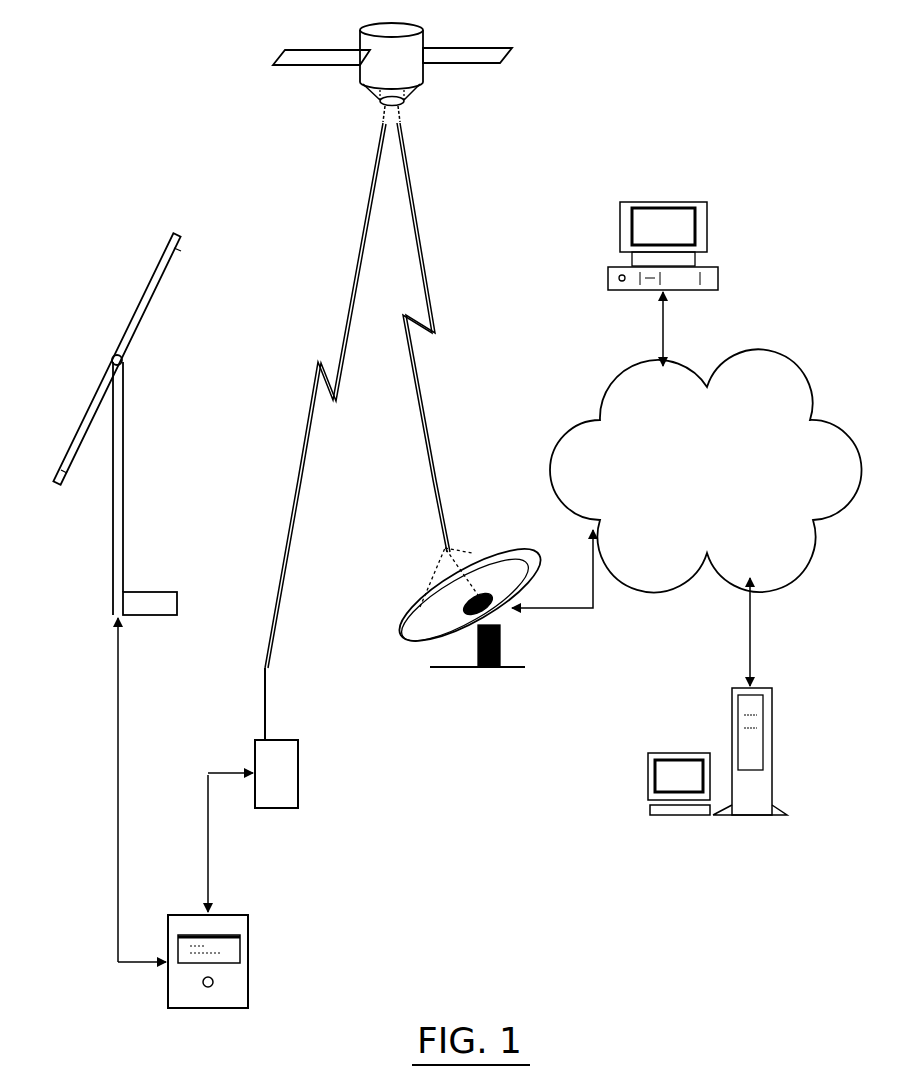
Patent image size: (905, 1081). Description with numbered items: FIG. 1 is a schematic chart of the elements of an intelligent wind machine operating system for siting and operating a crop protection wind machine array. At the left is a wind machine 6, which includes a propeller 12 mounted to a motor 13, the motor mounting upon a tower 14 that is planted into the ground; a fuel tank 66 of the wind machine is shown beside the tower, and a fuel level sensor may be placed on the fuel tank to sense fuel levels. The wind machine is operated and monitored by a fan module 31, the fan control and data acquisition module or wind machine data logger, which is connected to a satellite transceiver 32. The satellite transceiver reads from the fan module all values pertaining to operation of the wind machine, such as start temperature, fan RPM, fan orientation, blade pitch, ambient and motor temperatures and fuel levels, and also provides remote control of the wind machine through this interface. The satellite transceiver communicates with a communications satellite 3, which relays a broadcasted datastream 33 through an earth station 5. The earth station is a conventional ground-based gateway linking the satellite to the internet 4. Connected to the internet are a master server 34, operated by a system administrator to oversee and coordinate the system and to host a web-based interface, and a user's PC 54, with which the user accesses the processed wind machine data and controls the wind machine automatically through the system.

The communications satellite 3 is at (368, 72).
The broadcasted datastream 33 is at (318, 384).
The wind machine 6 is at (132, 413).
The propeller 12 is at (138, 330).
The motor 13 is at (124, 366).
The tower 14 is at (126, 478).
The fuel tank 66 is at (182, 576).
The satellite transceiver 32 is at (318, 764).
The fan module 31 is at (295, 932).
The earth station 5 is at (425, 605).
The internet 4 is at (706, 470).
The user's PC 54 is at (710, 270).
The master server 34 is at (740, 760).